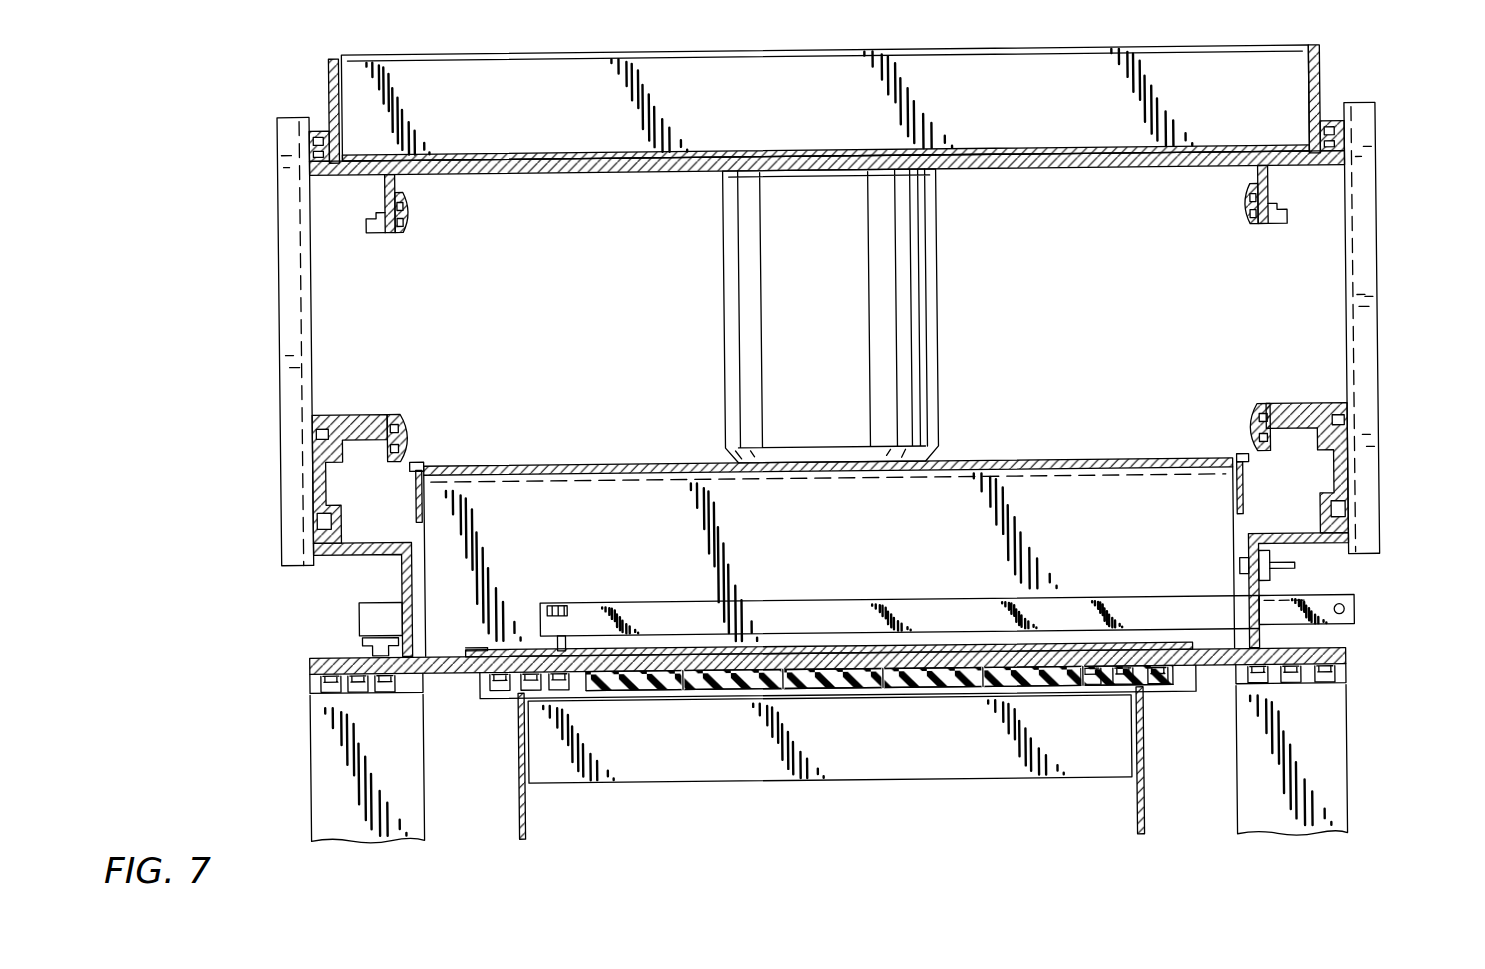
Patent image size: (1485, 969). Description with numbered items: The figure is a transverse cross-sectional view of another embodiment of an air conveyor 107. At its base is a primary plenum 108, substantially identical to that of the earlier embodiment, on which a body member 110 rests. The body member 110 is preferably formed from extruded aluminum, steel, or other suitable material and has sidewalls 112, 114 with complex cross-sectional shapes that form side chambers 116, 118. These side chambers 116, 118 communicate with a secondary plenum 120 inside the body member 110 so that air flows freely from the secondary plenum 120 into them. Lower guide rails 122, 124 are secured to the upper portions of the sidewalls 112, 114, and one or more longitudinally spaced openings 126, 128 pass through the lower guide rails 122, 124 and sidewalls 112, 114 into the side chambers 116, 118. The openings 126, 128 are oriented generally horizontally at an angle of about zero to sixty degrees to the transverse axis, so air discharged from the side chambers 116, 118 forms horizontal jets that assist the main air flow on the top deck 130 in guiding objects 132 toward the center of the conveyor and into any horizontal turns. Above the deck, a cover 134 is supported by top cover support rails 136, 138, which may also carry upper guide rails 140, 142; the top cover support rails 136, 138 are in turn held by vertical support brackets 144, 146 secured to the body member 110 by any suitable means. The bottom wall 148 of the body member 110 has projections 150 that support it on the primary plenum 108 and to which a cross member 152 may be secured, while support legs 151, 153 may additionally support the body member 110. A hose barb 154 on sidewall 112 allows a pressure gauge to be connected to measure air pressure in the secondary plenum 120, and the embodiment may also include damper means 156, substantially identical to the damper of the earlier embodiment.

The air conveyor 107 is at (1378, 230).
The primary plenum 108 is at (521, 806).
The body member 110 is at (1345, 654).
The sidewall 112 is at (1270, 545).
The sidewall 114 is at (372, 538).
The side chamber 116 is at (1350, 492).
The side chamber 118 is at (336, 480).
The secondary plenum 120 is at (540, 490).
The lower guide rail 122 is at (1256, 408).
The lower guide rail 124 is at (405, 410).
The opening 126 is at (1238, 462).
The opening 128 is at (425, 466).
The top deck 130 is at (985, 462).
The object 132 is at (928, 314).
The cover 134 is at (538, 150).
The top cover support rail 136 is at (1325, 78).
The top cover support rail 138 is at (332, 72).
The upper guide rail 140 is at (1243, 208).
The upper guide rail 142 is at (413, 212).
The vertical support bracket 144 is at (1378, 322).
The vertical support bracket 146 is at (280, 274).
The bottom wall 148 is at (1168, 690).
The projection 150 is at (1250, 462).
The support leg 151 is at (1343, 778).
The cross member 152 is at (760, 776).
The support leg 153 is at (312, 726).
The hose barb 154 is at (1294, 571).
The damper means 156 is at (622, 592).